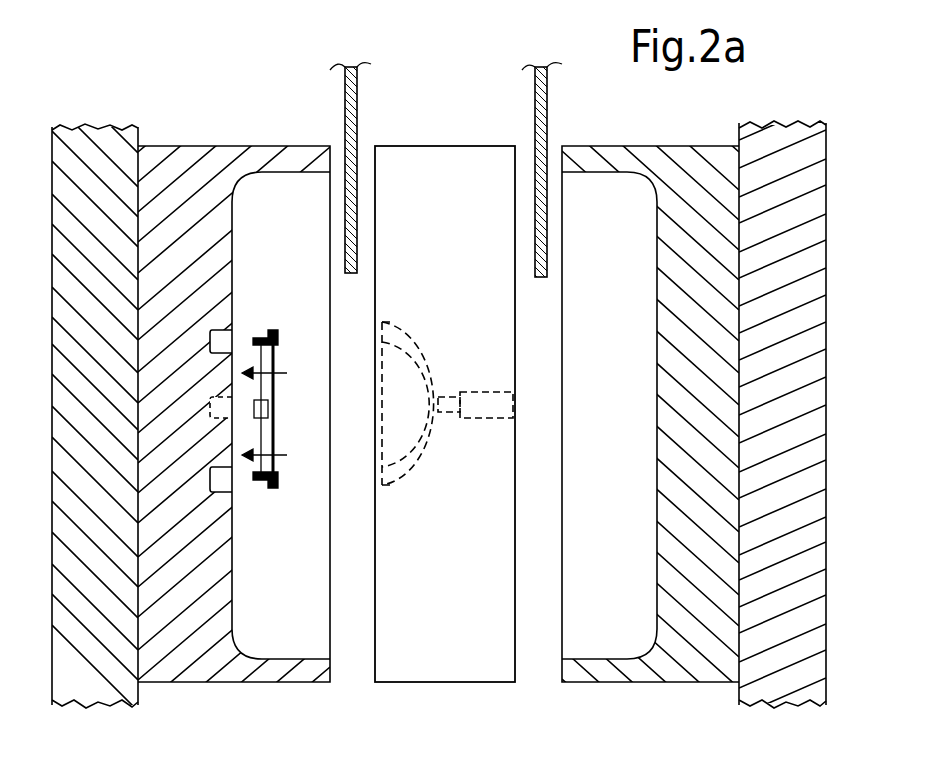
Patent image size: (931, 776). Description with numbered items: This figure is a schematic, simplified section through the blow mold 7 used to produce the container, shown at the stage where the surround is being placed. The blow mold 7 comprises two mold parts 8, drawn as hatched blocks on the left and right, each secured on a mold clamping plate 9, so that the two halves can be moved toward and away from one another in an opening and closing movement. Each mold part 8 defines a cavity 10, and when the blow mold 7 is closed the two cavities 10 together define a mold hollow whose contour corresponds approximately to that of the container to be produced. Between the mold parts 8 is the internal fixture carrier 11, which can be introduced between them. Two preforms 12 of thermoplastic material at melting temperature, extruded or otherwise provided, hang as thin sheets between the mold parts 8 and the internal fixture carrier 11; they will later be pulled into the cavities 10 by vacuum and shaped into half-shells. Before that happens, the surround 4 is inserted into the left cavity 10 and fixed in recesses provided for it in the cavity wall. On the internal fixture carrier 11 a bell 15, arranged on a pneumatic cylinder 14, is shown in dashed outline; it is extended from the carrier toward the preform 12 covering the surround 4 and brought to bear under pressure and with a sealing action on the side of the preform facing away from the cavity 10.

The blow mold 7 is at (218, 111).
The mold part 8 is at (196, 640).
The mold clamping plate 9 is at (88, 140).
The cavity 10 is at (283, 260).
The internal fixture carrier 11 is at (472, 160).
The preform 12 is at (344, 68).
The pneumatic cylinder 14 is at (485, 404).
The bell 15 is at (405, 337).
The surround 4 is at (262, 490).